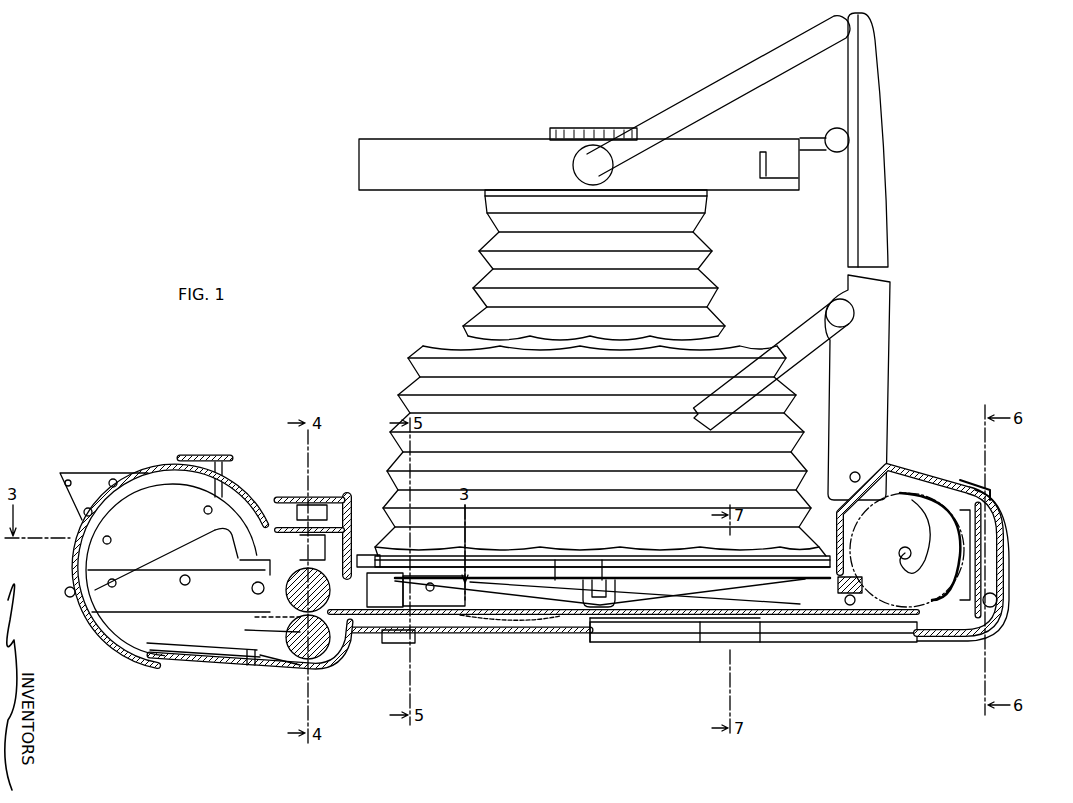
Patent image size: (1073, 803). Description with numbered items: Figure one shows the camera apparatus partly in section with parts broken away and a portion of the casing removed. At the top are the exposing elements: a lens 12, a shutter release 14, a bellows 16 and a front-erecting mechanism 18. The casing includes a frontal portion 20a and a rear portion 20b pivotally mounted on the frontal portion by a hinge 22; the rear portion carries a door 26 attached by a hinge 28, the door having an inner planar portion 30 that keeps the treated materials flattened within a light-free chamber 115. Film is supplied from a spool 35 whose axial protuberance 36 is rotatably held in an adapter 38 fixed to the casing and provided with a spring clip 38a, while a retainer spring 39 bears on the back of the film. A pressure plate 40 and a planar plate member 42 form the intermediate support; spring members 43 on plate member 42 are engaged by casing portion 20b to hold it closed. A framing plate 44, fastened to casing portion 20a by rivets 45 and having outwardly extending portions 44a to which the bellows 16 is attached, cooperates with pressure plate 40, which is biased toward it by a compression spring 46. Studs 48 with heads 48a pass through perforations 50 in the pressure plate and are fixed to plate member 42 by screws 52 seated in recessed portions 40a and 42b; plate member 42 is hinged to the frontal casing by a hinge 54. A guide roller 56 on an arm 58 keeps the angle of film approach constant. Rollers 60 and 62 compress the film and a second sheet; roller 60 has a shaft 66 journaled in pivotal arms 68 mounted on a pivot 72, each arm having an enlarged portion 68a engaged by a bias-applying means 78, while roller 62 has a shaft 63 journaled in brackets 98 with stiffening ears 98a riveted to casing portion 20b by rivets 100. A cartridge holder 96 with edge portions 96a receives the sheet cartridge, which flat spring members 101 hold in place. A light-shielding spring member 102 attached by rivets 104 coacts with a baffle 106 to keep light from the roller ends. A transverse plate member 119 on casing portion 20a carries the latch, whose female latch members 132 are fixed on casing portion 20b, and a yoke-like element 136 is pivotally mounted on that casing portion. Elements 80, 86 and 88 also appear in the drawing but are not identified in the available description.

The lens 12 is at (561, 128).
The shutter release 14 is at (760, 152).
The bellows 16 is at (438, 345).
The front-erecting mechanism 18 is at (848, 208).
The frontal portion 20a is at (168, 463).
The rear portion 20b is at (175, 665).
The hinge 22 is at (66, 594).
The door 26 is at (700, 644).
The hinge 28 is at (740, 644).
The inner planar portion 30 is at (665, 640).
The spool 35 is at (925, 470).
The axial protuberance 36 is at (905, 608).
The adapter 38 is at (880, 508).
The spring clip 38a is at (960, 527).
The retainer spring 39 is at (945, 492).
The pressure plate 40 is at (648, 558).
The recessed portion 40a is at (570, 558).
The planar plate member 42 is at (470, 616).
The recessed portion 42b is at (625, 622).
The spring members 43 is at (485, 635).
The framing plate 44 is at (820, 580).
The outwardly extending portions 44a is at (712, 578).
The rivets 45 is at (365, 555).
The compression spring 46 is at (485, 575).
The studs 48 is at (555, 578).
The head 48a is at (602, 578).
The perforation 50 is at (612, 578).
The screw 52 is at (600, 635).
The hinge 54 is at (993, 594).
The guide roller 56 is at (850, 606).
The arm 58 is at (838, 594).
The roller 60 is at (255, 586).
The roller 62 is at (232, 612).
The shaft 63 is at (258, 618).
The shaft 66 is at (262, 600).
The arms 68 is at (410, 568).
The enlarged portion 68a is at (255, 562).
The pivot 72 is at (432, 592).
The bias-applying means 78 is at (258, 445).
The housing 80 is at (344, 497).
The hook arm 86 is at (238, 555).
The cap 88 is at (295, 497).
The cartridge holder 96 is at (152, 521).
The edge portions 96a is at (170, 560).
The brackets 98 is at (248, 632).
The ear 98a is at (290, 668).
The rivets 100 is at (250, 664).
The flat spring members 101 is at (165, 643).
The light-shielding spring member 102 is at (388, 643).
The rivets 104 is at (308, 660).
The light-shielding baffle 106 is at (340, 650).
The chamber 115 is at (530, 622).
The transverse plate member 119 is at (985, 493).
The female latch members 132 is at (985, 546).
The yoke-like element 136 is at (1018, 609).